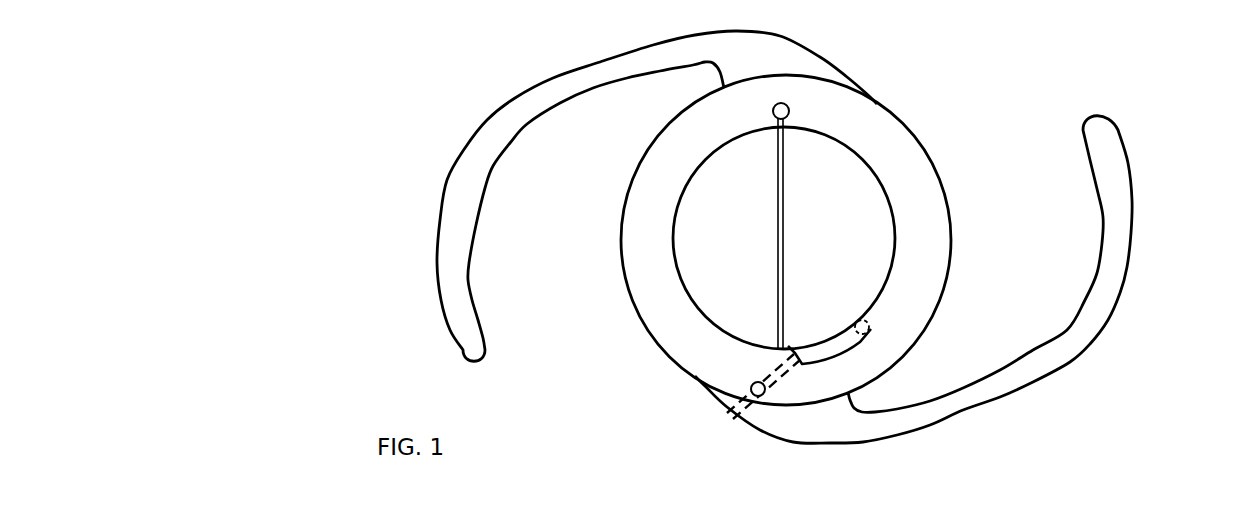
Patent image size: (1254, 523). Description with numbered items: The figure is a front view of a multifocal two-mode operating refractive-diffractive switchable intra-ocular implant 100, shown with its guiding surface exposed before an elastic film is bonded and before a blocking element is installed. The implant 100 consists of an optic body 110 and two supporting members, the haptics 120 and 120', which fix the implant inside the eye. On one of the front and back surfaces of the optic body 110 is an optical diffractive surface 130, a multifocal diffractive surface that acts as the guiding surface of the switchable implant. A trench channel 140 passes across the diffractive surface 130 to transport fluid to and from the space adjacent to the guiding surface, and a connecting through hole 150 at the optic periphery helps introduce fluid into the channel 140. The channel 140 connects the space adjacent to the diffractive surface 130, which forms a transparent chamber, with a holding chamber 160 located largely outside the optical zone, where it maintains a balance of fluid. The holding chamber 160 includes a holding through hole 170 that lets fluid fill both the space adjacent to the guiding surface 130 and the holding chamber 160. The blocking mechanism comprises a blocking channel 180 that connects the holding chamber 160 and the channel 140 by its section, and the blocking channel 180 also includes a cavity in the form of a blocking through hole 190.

The refractive-diffractive switchable intra-ocular implant 100 is at (1066, 70).
The optic body 110 is at (627, 188).
The supporting member (haptic) 120 is at (961, 280).
The supporting member (haptic) 120' is at (655, 196).
The optical diffractive surface 130 is at (673, 258).
The trench channel 140 is at (786, 152).
The connecting through hole 150 is at (784, 97).
The holding chamber 160 is at (852, 352).
The holding through hole 170 is at (872, 317).
The blocking channel 180 is at (725, 400).
The blocking through hole 190 is at (746, 386).